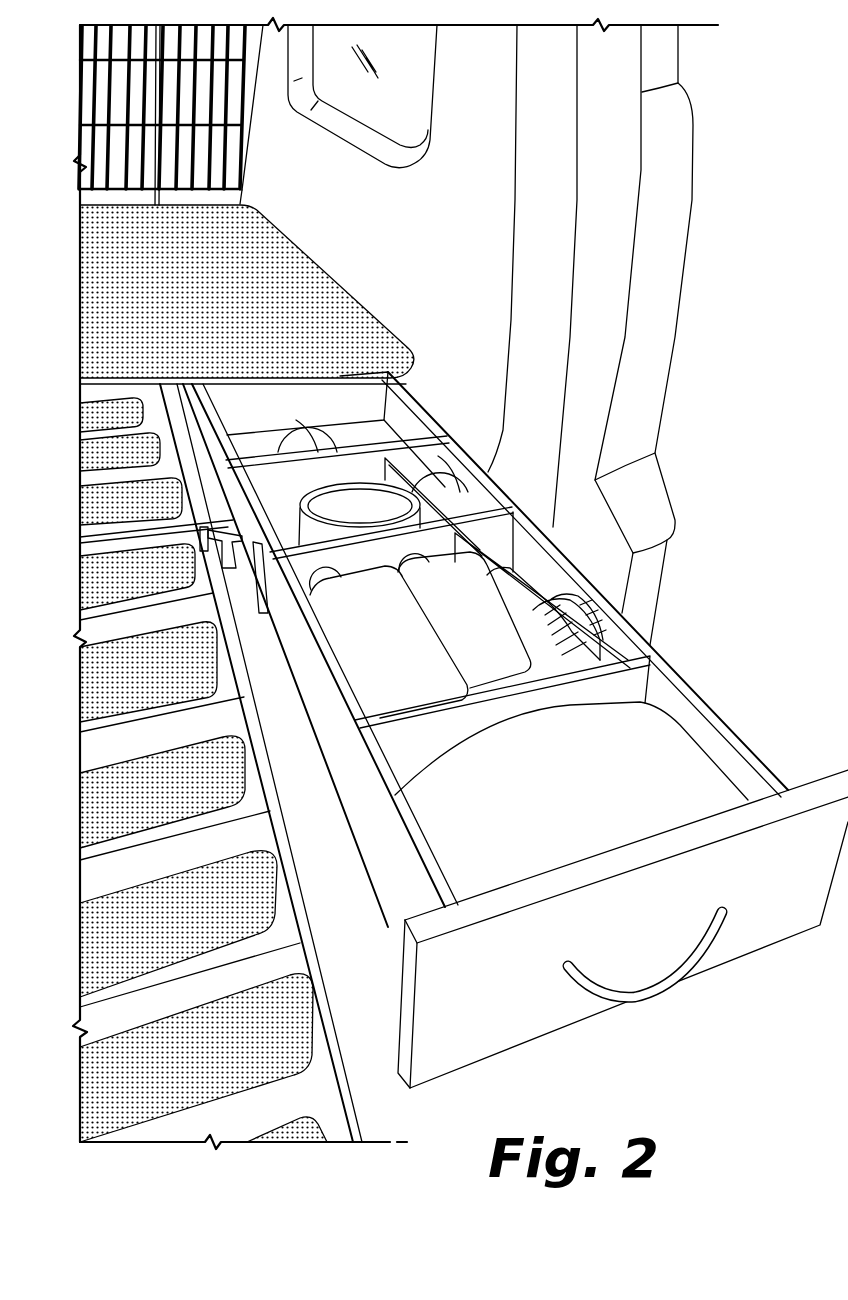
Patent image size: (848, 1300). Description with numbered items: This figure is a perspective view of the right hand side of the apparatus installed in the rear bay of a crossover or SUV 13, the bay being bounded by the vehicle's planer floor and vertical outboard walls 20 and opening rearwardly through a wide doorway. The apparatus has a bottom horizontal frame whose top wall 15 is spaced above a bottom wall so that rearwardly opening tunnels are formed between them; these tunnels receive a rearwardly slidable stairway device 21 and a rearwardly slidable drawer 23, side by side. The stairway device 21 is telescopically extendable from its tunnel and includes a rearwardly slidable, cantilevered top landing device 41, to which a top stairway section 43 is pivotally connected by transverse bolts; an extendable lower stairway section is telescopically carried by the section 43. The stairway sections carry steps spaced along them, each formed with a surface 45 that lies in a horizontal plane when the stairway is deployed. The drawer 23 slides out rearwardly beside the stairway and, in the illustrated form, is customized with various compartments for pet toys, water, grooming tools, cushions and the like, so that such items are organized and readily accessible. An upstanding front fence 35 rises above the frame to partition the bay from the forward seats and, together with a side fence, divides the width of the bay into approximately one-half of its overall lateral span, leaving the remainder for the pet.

The SUV 13 is at (672, 388).
The top wall 15 is at (356, 333).
The vertical outboard wall 20 is at (483, 248).
The stairway device 21 is at (307, 896).
The drawer 23 is at (714, 688).
The front fence 35 is at (252, 111).
The top landing device 41 is at (156, 470).
The top stairway section 43 is at (108, 747).
The step surface 45 is at (203, 843).